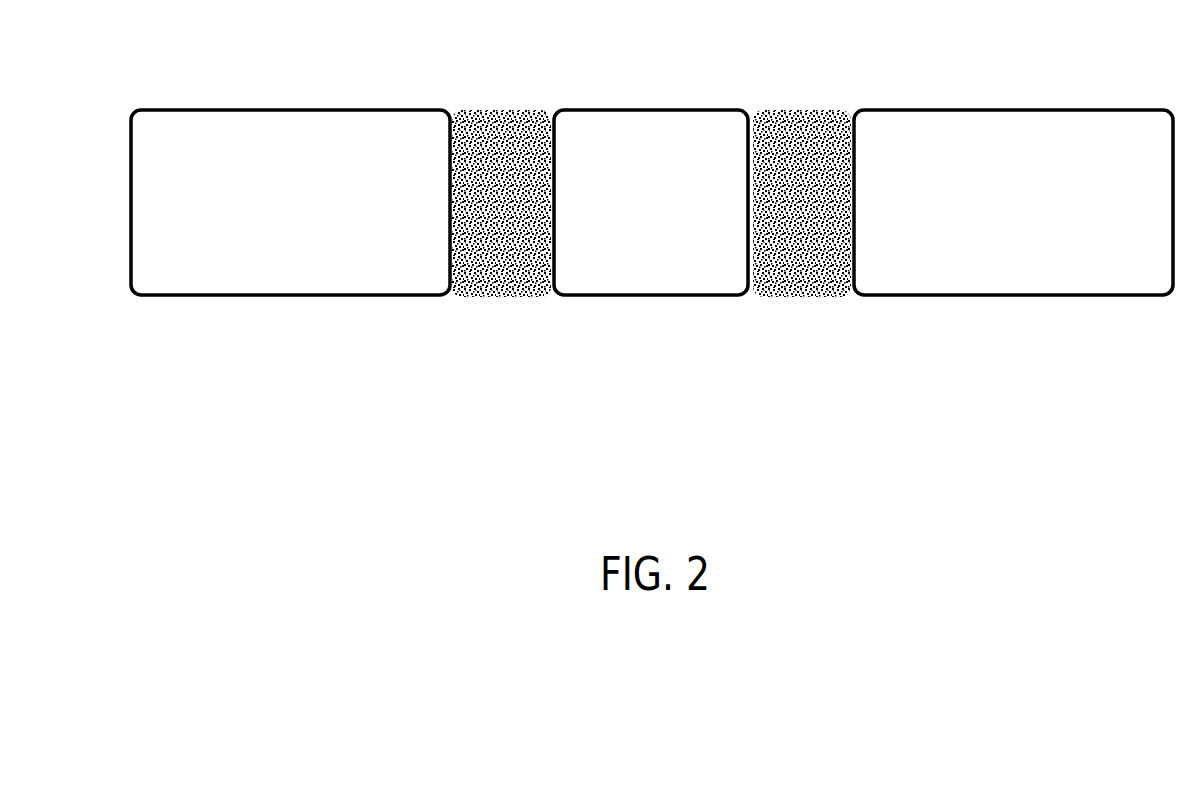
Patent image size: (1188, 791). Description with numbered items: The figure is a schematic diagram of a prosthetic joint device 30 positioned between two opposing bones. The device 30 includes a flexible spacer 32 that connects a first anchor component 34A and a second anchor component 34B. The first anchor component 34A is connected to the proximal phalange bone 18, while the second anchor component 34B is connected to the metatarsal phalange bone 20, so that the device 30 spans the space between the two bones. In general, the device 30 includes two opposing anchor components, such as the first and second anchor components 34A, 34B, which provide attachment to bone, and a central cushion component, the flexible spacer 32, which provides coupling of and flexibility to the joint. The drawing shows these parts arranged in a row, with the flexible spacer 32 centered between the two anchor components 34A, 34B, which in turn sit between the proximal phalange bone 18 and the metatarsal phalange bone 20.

The prosthetic joint device 30 is at (652, 238).
The metatarsal phalange bone 20 is at (277, 108).
The proximal phalange bone 18 is at (1003, 108).
The flexible spacer 32 is at (645, 331).
The first anchor component 34A is at (798, 330).
The second anchor component 34B is at (502, 331).